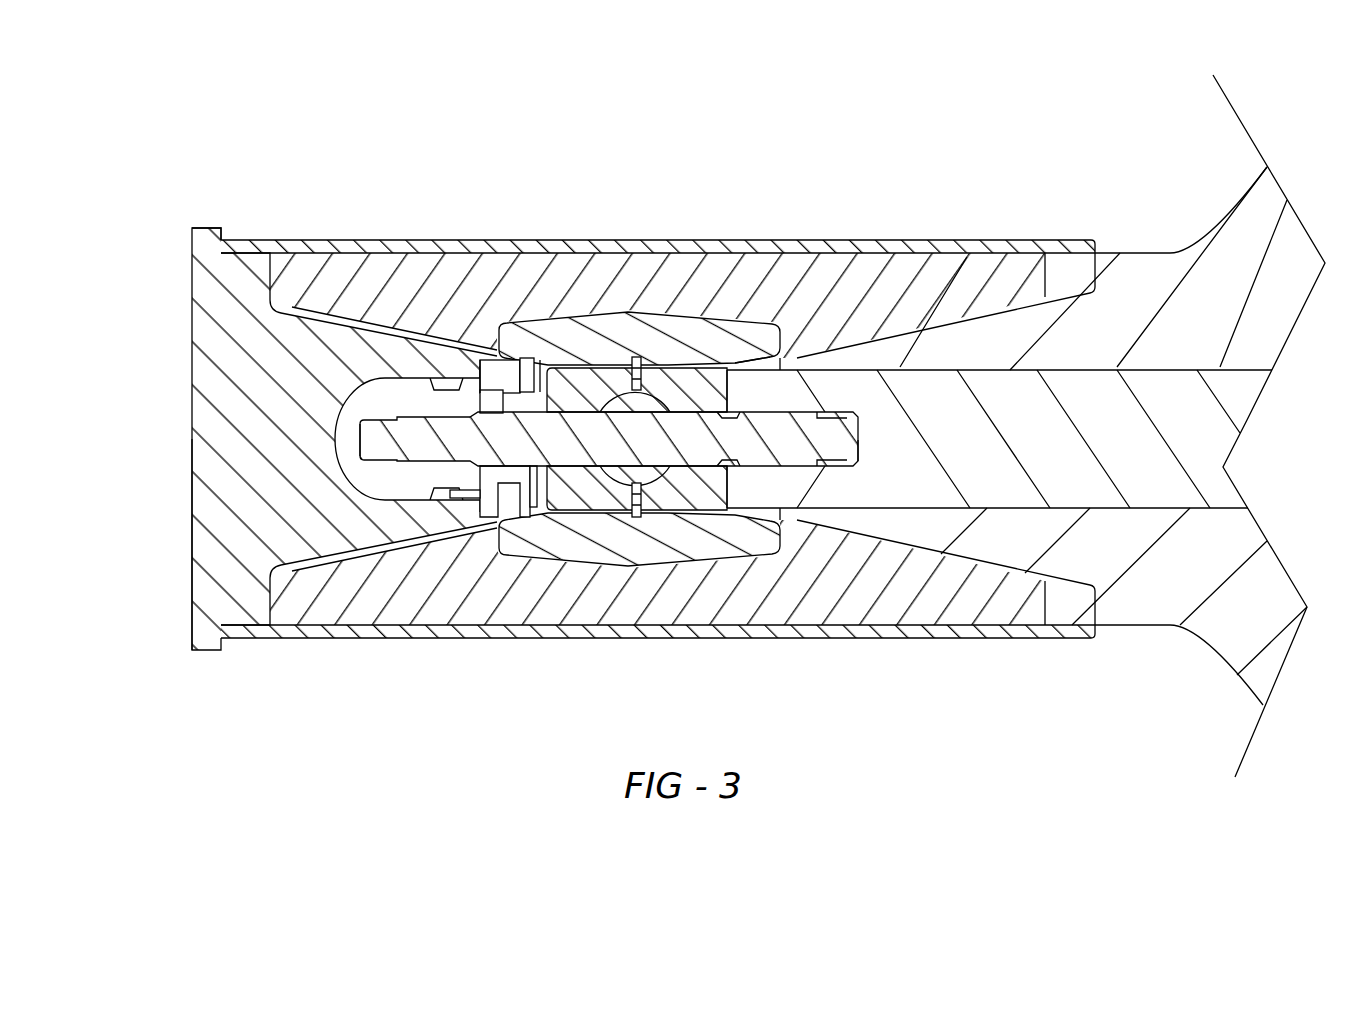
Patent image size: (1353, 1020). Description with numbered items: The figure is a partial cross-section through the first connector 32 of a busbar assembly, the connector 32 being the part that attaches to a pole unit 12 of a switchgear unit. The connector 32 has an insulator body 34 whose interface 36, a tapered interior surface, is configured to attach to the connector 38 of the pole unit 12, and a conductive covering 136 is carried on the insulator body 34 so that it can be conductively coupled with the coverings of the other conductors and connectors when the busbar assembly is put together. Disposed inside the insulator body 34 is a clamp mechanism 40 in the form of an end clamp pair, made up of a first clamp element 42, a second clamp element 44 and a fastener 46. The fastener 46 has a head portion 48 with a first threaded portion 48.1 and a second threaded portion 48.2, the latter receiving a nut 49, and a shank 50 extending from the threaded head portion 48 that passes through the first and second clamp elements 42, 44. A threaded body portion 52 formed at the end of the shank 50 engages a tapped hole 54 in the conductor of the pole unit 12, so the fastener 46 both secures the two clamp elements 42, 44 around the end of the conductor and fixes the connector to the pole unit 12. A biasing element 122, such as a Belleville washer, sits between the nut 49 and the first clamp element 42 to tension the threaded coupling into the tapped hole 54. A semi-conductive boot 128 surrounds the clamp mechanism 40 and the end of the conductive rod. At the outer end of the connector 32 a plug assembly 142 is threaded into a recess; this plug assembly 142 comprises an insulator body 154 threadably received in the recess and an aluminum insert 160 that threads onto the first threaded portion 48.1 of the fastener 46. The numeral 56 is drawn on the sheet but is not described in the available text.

The pole unit 12 is at (1222, 290).
The first connector 32 is at (305, 135).
The insulator body 34 is at (347, 600).
The interface 36 is at (912, 527).
The connector 38 is at (950, 523).
The clamp mechanism 40 is at (658, 380).
The first clamp element 42 is at (583, 493).
The second clamp element 44 is at (757, 490).
The fastener 46 is at (641, 430).
The head portion 48 is at (442, 440).
The first threaded portion 48.1 is at (420, 435).
The second threaded portion 48.2 is at (517, 430).
The nut 49 is at (497, 480).
The shank 50 is at (693, 497).
The threaded body portion 52 is at (800, 410).
The tapped hole 54 is at (856, 508).
The core 56 is at (1023, 407).
The biasing element 122 is at (541, 385).
The semi-conductive boot 128 is at (617, 557).
The conductive covering 136 is at (928, 240).
The plug assembly 142 is at (175, 540).
The insulator body 154 is at (207, 284).
The aluminum insert 160 is at (387, 483).